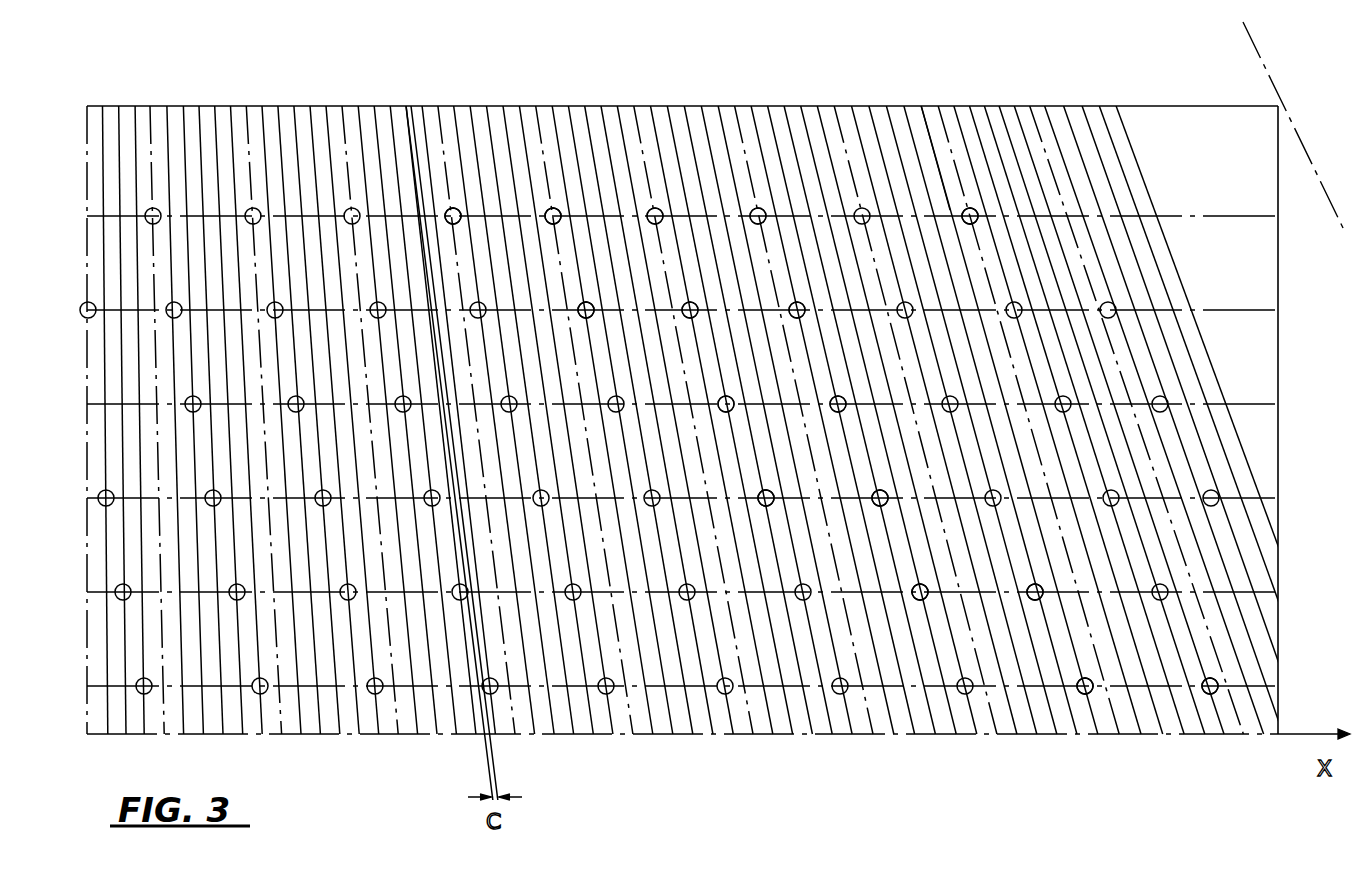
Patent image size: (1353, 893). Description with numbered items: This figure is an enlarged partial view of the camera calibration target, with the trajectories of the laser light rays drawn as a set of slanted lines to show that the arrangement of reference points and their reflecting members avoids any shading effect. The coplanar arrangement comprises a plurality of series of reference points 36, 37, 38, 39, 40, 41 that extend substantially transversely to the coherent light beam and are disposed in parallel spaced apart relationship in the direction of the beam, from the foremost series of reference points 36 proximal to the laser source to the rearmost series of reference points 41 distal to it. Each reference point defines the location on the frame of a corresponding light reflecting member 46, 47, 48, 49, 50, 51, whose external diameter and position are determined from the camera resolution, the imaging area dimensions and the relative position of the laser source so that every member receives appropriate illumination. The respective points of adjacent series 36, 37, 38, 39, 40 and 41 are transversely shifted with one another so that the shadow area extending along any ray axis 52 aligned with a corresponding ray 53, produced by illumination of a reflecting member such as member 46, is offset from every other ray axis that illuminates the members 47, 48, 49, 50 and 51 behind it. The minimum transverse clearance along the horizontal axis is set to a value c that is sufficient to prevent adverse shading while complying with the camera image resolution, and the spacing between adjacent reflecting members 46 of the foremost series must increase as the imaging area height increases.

The reference points 36 is at (548, 210).
The reference points 37 is at (690, 302).
The reference points 38 is at (838, 396).
The reference points 39 is at (880, 506).
The reference points 40 is at (921, 600).
The reference points 41 is at (1210, 694).
The light reflecting members 46 is at (553, 208).
The light reflecting members 47 is at (688, 302).
The light reflecting members 48 is at (838, 396).
The light reflecting members 49 is at (884, 503).
The light reflecting members 50 is at (915, 598).
The light reflecting members 51 is at (1214, 694).
The ray axis 52 is at (940, 125).
The ray 53 is at (982, 265).